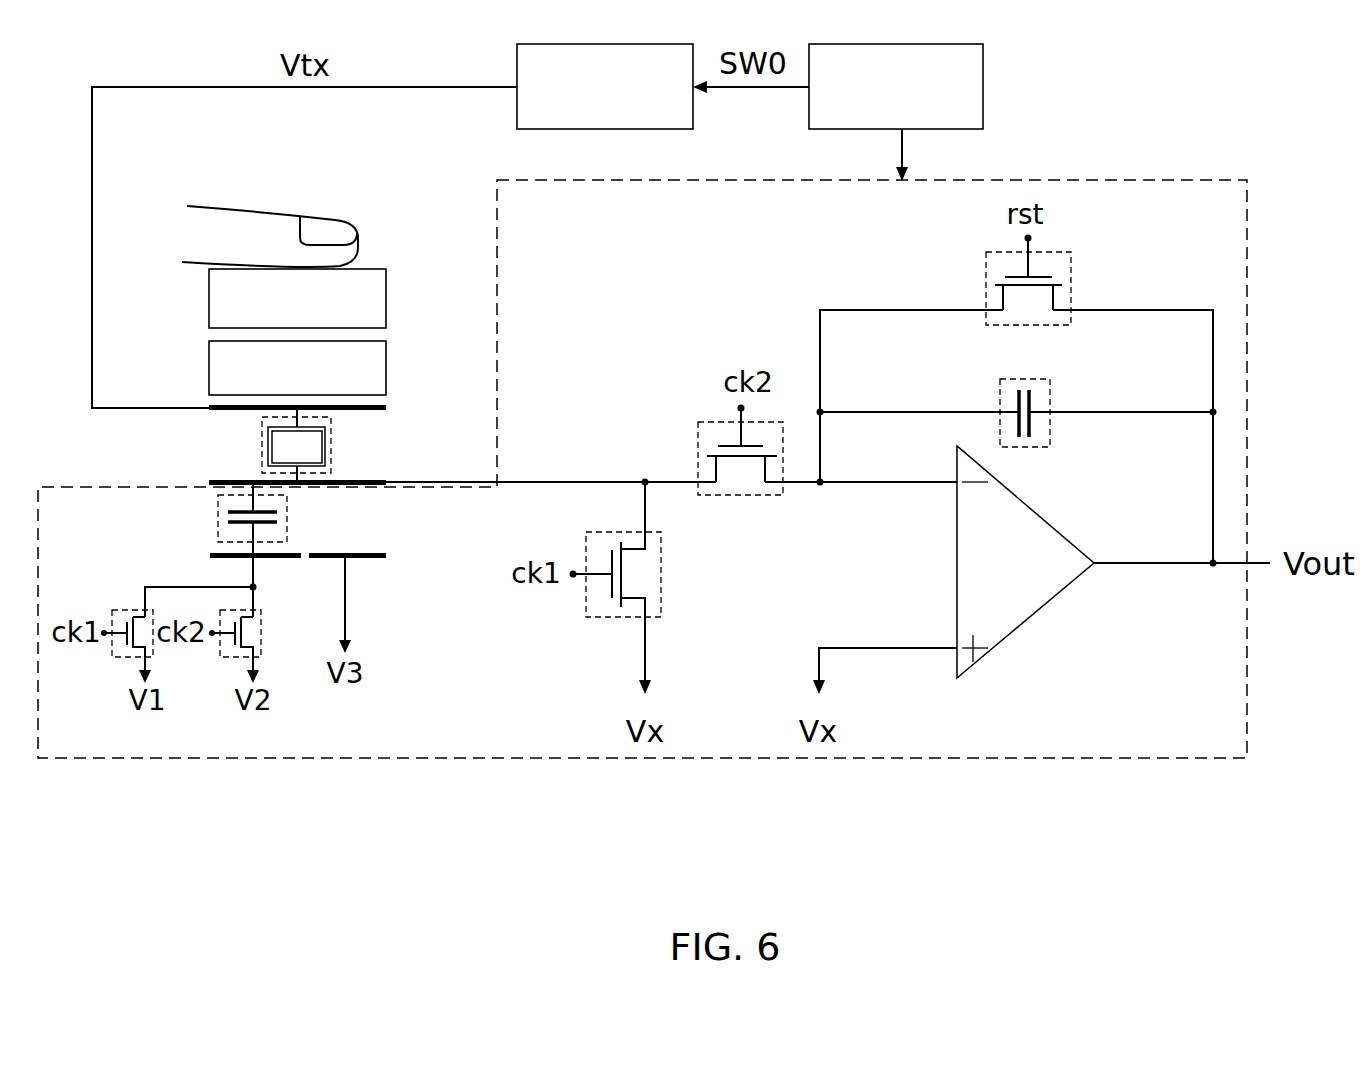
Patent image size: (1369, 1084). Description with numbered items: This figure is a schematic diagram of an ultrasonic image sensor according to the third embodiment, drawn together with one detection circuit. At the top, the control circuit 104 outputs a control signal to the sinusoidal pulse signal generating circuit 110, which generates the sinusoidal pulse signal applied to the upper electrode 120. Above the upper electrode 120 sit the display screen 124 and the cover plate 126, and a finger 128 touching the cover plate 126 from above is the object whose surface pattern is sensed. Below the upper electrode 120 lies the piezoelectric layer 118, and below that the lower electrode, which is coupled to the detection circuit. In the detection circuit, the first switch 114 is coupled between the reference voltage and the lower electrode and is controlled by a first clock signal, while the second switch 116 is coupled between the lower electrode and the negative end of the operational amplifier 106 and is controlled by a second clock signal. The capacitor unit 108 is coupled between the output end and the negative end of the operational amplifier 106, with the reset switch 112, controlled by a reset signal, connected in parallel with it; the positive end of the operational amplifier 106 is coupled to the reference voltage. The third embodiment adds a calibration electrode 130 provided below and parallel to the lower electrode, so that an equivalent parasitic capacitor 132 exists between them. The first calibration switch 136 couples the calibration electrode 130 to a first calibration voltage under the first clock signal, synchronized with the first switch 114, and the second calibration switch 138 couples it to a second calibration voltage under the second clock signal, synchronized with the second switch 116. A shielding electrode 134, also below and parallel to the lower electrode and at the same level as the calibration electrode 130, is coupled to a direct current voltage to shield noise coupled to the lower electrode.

The control circuit 104 is at (871, 105).
The operational amplifier 106 is at (1033, 617).
The capacitor unit 108 is at (1052, 434).
The sinusoidal pulse signal generating circuit 110 is at (580, 105).
The reset switch 112 is at (1072, 283).
The first switch 114 is at (615, 619).
The second switch 116 is at (697, 443).
The piezoelectric layer 118 is at (333, 460).
The upper electrode 120 is at (208, 404).
The display screen 124 is at (272, 383).
The cover plate 126 is at (272, 313).
The finger 128 is at (352, 223).
The calibration electrode 130 is at (210, 552).
The equivalent parasitic capacitor 132 is at (217, 503).
The shielding electrode 134 is at (388, 552).
The first calibration switch 136 is at (122, 608).
The second calibration switch 138 is at (262, 633).